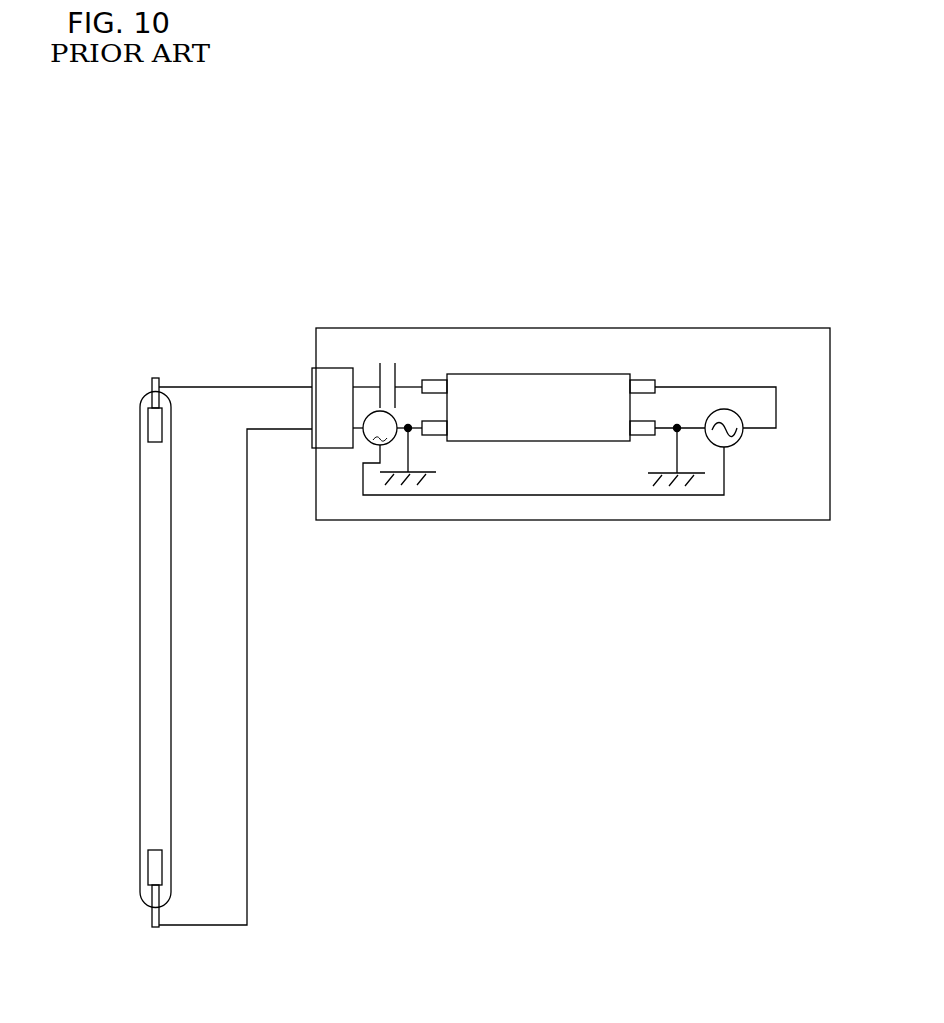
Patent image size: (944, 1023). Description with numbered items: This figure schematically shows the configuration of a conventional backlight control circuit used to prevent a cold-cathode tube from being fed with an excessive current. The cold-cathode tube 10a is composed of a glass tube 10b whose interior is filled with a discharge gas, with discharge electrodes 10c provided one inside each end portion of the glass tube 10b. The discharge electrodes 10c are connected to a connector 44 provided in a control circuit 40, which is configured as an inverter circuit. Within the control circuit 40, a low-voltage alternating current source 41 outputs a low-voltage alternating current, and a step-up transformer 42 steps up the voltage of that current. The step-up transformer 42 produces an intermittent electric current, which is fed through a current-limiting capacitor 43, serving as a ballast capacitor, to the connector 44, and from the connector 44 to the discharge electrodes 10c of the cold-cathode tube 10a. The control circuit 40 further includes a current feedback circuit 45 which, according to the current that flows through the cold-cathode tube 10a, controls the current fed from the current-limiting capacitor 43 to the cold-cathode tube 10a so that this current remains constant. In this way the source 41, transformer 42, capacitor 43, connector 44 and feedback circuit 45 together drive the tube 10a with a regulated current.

The cold-cathode tube 10a is at (113, 652).
The glass tube 10b is at (140, 557).
The discharge electrodes 10c is at (150, 420).
The control circuit 40 is at (776, 329).
The low-voltage alternating current source 41 is at (724, 448).
The step-up transformer 42 is at (475, 376).
The current-limiting capacitor 43 is at (388, 362).
The connector 44 is at (312, 376).
The current feedback circuit 45 is at (362, 444).